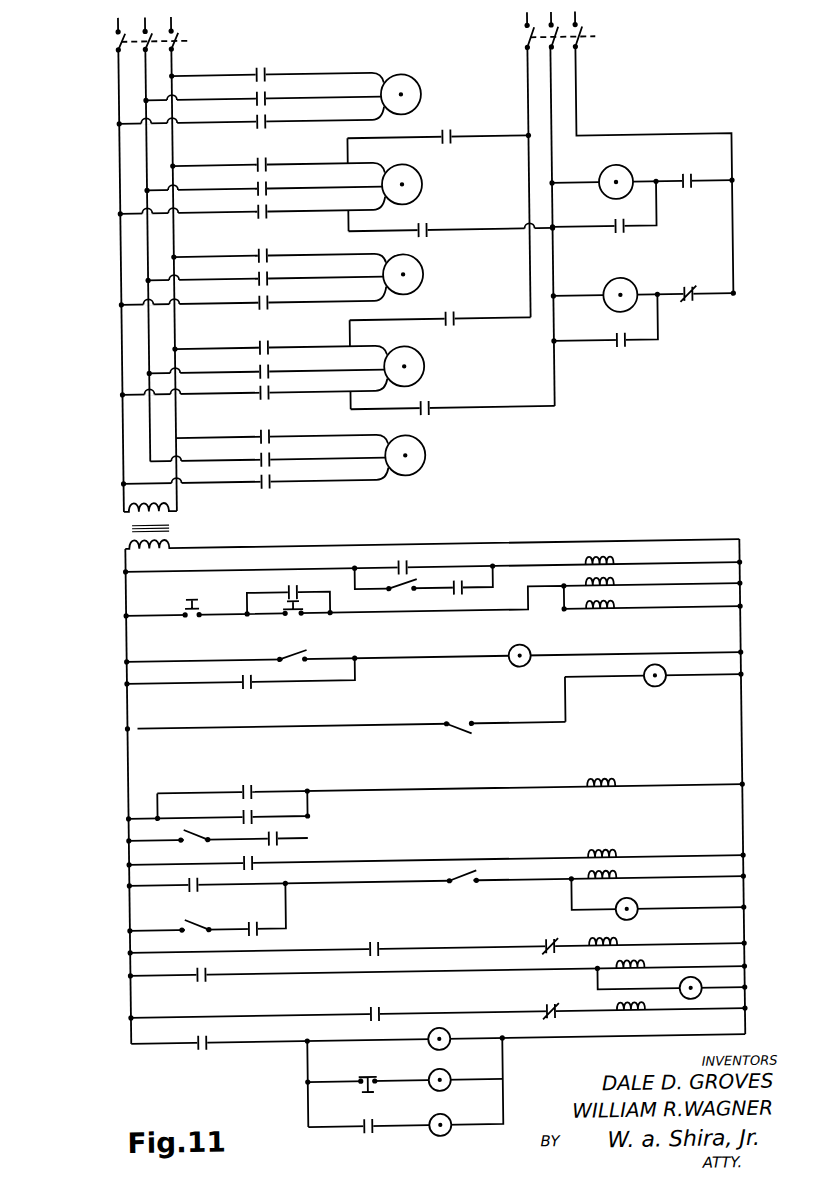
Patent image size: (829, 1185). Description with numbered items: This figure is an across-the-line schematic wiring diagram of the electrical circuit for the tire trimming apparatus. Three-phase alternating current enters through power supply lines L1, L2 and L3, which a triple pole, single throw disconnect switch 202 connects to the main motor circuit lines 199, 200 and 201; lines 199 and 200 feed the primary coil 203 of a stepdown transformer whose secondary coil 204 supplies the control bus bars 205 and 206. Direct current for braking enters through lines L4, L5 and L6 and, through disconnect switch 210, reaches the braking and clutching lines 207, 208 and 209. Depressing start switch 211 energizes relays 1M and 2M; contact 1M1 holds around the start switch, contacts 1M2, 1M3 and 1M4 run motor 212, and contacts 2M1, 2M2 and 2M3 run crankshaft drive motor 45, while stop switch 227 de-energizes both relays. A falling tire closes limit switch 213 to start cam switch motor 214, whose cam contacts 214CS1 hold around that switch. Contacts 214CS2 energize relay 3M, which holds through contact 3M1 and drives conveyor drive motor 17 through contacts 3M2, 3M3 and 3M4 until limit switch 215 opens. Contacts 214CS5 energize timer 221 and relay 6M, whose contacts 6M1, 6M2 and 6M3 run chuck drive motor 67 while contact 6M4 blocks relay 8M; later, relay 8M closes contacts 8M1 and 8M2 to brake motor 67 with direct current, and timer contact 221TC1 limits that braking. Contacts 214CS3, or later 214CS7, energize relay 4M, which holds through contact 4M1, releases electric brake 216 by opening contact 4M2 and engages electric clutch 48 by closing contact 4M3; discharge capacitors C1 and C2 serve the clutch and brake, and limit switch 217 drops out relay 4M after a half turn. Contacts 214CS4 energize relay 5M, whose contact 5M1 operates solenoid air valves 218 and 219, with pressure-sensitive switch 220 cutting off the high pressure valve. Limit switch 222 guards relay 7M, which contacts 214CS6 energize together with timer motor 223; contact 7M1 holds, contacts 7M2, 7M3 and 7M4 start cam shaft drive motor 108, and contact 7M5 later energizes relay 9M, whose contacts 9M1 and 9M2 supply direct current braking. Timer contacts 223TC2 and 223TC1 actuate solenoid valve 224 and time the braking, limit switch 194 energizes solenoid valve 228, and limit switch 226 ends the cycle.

The main motor circuit line 199 is at (124, 436).
The main motor circuit line 200 is at (153, 459).
The main motor circuit line 201 is at (180, 430).
The disconnect switch 202 is at (187, 58).
The primary coil 203 is at (124, 514).
The secondary coil 204 is at (126, 548).
The power supply line 205 is at (124, 613).
The power supply line 206 is at (742, 716).
The braking and clutching line 207 is at (533, 70).
The braking and clutching line 208 is at (559, 168).
The braking and clutching line 209 is at (583, 100).
The disconnect switch 210 is at (593, 58).
The start switch 211 is at (298, 616).
The motor 212 is at (428, 92).
The limit switch 213 is at (292, 652).
The cam switch motor 214 is at (530, 653).
The limit switch 215 is at (404, 588).
The electric brake 216 is at (636, 287).
The limit switch 217 is at (193, 840).
The solenoid air valve 218 is at (444, 1089).
The solenoid air valve 219 is at (444, 1048).
The pressure-sensitive switch 220 is at (370, 1076).
The timer 221 is at (698, 986).
The limit switch 222 is at (466, 882).
The timer motor 223 is at (636, 905).
The solenoid valve 224 is at (444, 1134).
The limit switch 226 is at (193, 930).
The stop switch 227 is at (193, 624).
The solenoid valve 228 is at (660, 689).
The conveyor drive motor 17 is at (427, 452).
The crankshaft drive motor 45 is at (427, 271).
The electric clutch 48 is at (636, 176).
The chuck drive motor 67 is at (427, 363).
The cam shaft drive motor 108 is at (427, 181).
The limit switch 194 is at (466, 734).
The power supply line L1 is at (118, 33).
The power supply line L2 is at (152, 16).
The power supply line L3 is at (179, 15).
The power supply line L4 is at (530, 32).
The power supply line L5 is at (560, 15).
The power supply line L6 is at (584, 15).
The discharge capacitor C1 is at (628, 235).
The discharge capacitor C2 is at (628, 349).
The relay 1M is at (615, 587).
The relay 2M is at (615, 609).
The relay 3M is at (615, 566).
The relay 4M is at (613, 786).
The relay 5M is at (613, 857).
The relay 6M is at (640, 969).
The relay 7M is at (613, 879).
The relay 8M is at (640, 1016).
The relay 9M is at (613, 946).
The relay contact 1M1 is at (297, 585).
The relay contact 1M2 is at (273, 69).
The relay contact 1M3 is at (273, 93).
The relay contact 1M4 is at (273, 116).
The relay contact 2M1 is at (273, 250).
The relay contact 2M2 is at (273, 273).
The relay contact 2M3 is at (273, 297).
The relay contact 3M1 is at (462, 594).
The relay contact 3M2 is at (273, 431).
The relay contact 3M3 is at (273, 454).
The relay contact 3M4 is at (273, 476).
The relay contact 4M1 is at (274, 843).
The relay contact 4M2 is at (697, 305).
The relay contact 4M3 is at (688, 192).
The relay contact 5M1 is at (202, 1046).
The relay contact 6M1 is at (273, 342).
The relay contact 6M2 is at (273, 366).
The relay contact 6M3 is at (273, 387).
The relay contact 6M4 is at (540, 1010).
The relay contact 7M1 is at (253, 933).
The relay contact 7M2 is at (273, 159).
The relay contact 7M3 is at (273, 183).
The relay contact 7M4 is at (273, 206).
The relay contact 7M5 is at (540, 945).
The relay contact 8M1 is at (458, 313).
The relay contact 8M2 is at (432, 402).
The relay contact 9M1 is at (464, 125).
The relay contact 9M2 is at (432, 224).
The cam switch contacts 214CS1 is at (250, 686).
The cam switch contacts 214CS2 is at (408, 562).
The cam switch contacts 214CS3 is at (242, 784).
The cam switch contacts 214CS4 is at (250, 867).
The cam switch contacts 214CS5 is at (202, 978).
The cam switch contacts 214CS6 is at (195, 888).
The cam switch contacts 214CS7 is at (243, 810).
The timer contacts 223TC1 is at (374, 942).
The timer contacts 223TC2 is at (366, 1133).
The timer relay contact 221TC1 is at (374, 1007).